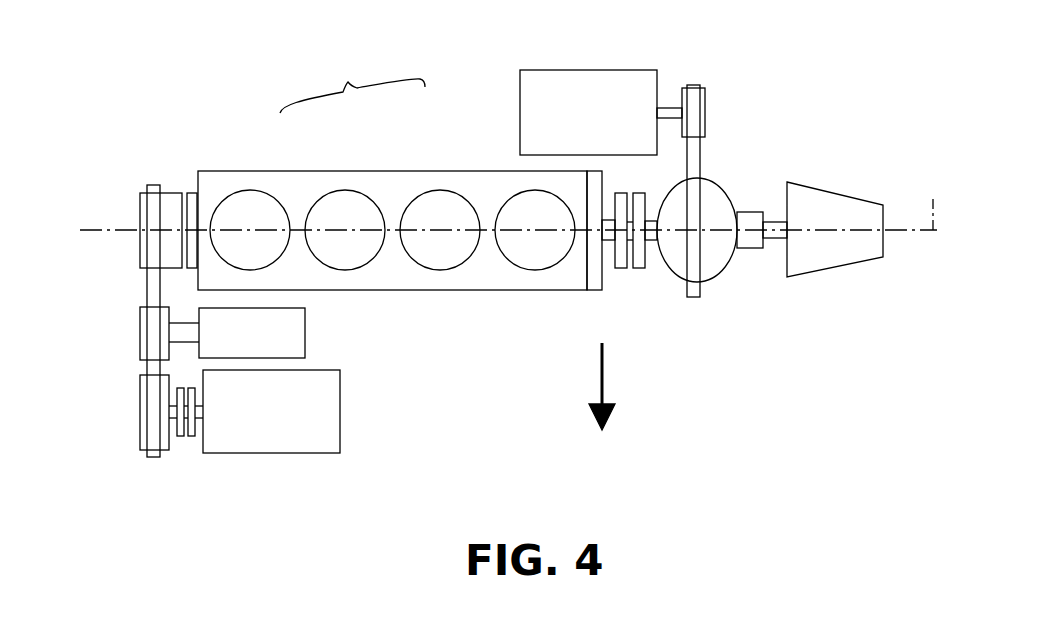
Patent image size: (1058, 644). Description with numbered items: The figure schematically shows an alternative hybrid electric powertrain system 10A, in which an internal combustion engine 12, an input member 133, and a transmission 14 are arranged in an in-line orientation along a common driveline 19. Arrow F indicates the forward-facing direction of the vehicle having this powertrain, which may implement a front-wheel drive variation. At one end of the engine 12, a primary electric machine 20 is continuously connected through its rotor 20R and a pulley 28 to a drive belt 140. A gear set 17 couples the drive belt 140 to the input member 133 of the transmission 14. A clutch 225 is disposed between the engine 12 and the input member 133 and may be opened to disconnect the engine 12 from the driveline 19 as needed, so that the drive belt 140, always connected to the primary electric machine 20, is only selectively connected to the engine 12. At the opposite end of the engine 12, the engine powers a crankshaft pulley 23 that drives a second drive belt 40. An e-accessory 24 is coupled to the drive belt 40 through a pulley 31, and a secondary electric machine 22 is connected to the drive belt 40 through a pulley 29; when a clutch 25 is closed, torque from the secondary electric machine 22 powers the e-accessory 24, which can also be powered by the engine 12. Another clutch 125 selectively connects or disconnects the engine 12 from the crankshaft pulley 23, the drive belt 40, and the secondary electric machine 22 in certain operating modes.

The hybrid electric powertrain system 10A is at (512, 259).
The internal combustion engine 12 is at (408, 290).
The transmission 14 is at (849, 241).
The gear set 17 is at (718, 186).
The driveline 19 is at (933, 198).
The primary electric machine 20 is at (618, 70).
The rotor 20R is at (670, 104).
The secondary electric machine 22 is at (340, 425).
The crankshaft pulley 23 is at (140, 215).
The e-accessory 24 is at (305, 347).
The clutch 25 is at (187, 461).
The pulley 28 is at (705, 108).
The pulley 29 is at (140, 410).
The pulley 31 is at (140, 323).
The drive belt 40 is at (145, 371).
The clutch 125 is at (183, 176).
The input member 133 is at (771, 249).
The drive belt 140 is at (700, 153).
The clutch 225 is at (630, 296).
The arrow F is at (597, 377).